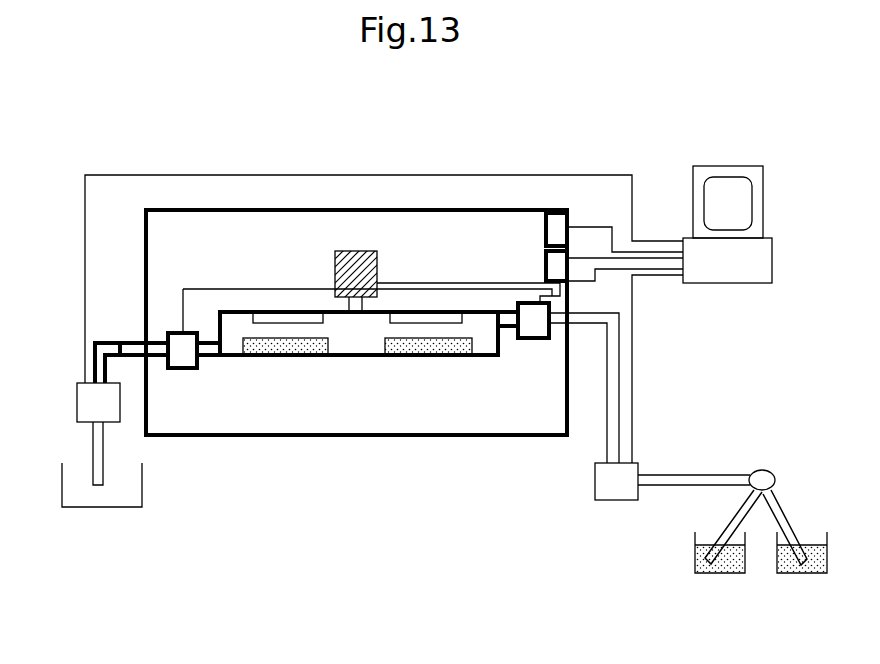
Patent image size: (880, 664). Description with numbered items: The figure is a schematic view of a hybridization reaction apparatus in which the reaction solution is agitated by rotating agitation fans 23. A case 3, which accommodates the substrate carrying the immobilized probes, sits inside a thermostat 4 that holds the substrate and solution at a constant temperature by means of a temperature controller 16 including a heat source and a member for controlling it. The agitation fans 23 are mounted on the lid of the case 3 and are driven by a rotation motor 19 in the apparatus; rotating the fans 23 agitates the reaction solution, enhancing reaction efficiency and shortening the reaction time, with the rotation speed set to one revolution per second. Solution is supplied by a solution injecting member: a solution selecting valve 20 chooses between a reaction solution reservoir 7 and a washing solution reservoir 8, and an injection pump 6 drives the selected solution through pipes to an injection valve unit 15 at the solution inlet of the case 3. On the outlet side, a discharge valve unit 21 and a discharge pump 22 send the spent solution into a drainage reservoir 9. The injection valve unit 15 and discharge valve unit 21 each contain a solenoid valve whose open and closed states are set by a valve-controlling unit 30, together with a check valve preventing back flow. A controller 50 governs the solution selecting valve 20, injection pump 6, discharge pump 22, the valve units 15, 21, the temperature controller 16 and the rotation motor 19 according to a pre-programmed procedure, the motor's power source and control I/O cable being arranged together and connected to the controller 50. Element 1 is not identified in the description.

The lower electrode 1 is at (265, 357).
The case 3 is at (238, 310).
The thermostat 4 is at (272, 208).
The injection pump 6 is at (603, 488).
The reaction solution reservoir 7 is at (715, 567).
The washing solution reservoir 8 is at (788, 563).
The drainage reservoir 9 is at (122, 507).
The injection valve unit 15 is at (532, 315).
The temperature controller 16 is at (555, 228).
The rotation motor 19 is at (357, 250).
The solution selecting valve 20 is at (760, 472).
The discharge valve unit 21 is at (168, 333).
The discharge pump 22 is at (85, 398).
The agitation fans 23 is at (413, 320).
The valve-controlling unit 30 is at (544, 262).
The controller 50 is at (735, 275).